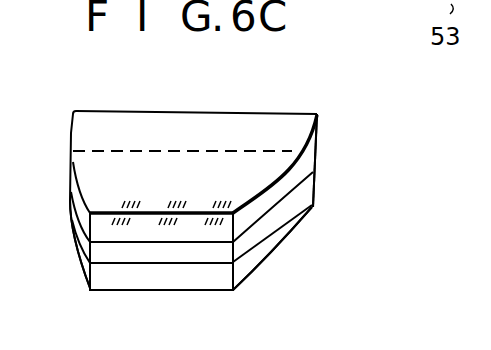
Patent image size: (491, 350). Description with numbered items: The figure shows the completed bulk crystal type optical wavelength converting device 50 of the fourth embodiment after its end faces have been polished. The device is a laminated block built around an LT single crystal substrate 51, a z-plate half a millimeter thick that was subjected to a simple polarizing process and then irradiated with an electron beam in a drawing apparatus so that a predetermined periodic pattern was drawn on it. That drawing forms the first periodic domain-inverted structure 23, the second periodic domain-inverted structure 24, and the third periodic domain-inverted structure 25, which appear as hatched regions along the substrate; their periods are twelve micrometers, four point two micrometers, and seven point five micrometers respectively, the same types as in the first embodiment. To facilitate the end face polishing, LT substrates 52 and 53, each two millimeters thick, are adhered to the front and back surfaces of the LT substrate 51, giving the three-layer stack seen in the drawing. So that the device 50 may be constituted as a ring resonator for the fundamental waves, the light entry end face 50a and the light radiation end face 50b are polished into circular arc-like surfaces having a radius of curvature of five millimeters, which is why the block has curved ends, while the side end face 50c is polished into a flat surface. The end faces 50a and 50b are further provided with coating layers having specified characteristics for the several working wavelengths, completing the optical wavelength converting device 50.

The optical wavelength converting device 50 is at (165, 103).
The light entry end face 50a is at (80, 261).
The light radiation end face 50b is at (247, 269).
The side end face 50c is at (318, 133).
The LT single crystal substrate 51 is at (284, 213).
The LT substrate 52 is at (258, 123).
The LT substrate 53 is at (283, 240).
The first periodic domain-inverted structure 23 is at (130, 199).
The second periodic domain-inverted structure 24 is at (190, 177).
The third periodic domain-inverted structure 25 is at (250, 178).